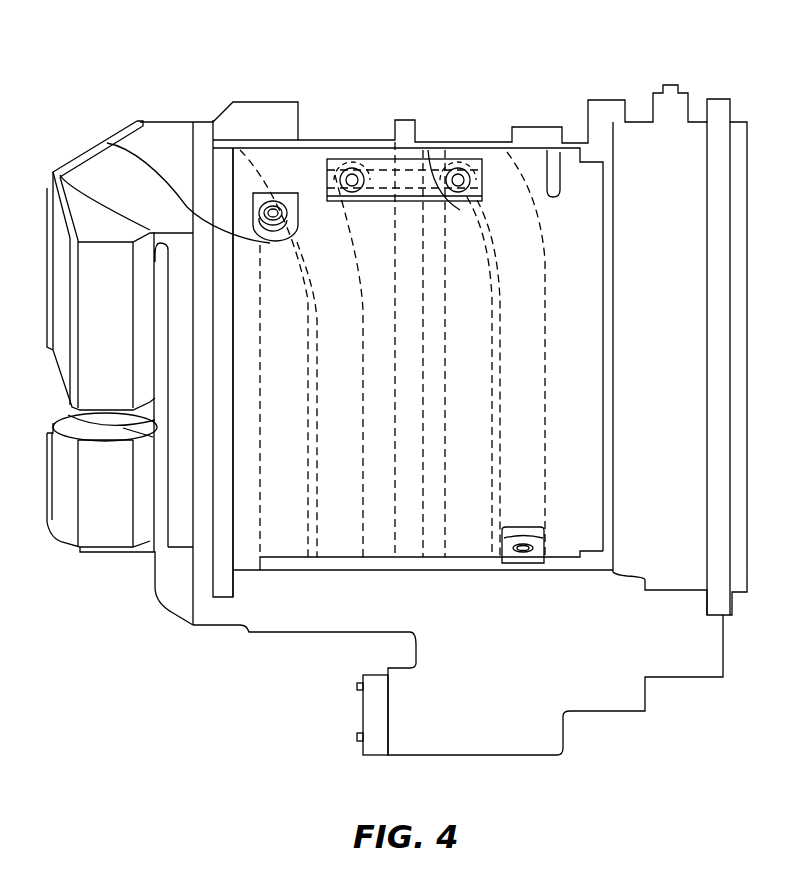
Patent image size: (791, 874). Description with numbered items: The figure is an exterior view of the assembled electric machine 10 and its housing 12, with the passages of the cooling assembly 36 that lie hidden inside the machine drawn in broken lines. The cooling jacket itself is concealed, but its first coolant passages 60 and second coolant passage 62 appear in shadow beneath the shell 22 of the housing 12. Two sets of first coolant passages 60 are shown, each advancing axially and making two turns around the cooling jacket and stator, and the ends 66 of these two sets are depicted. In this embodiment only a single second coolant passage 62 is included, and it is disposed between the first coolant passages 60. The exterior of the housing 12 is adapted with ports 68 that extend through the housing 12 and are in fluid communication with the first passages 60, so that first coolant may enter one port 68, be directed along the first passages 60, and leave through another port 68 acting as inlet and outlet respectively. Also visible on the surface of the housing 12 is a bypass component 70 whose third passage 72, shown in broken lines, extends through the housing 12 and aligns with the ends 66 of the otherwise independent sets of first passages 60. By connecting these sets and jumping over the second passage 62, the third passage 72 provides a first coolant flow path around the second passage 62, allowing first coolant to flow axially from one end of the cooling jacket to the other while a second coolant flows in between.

The electric machine 10 is at (386, 380).
The housing 12 is at (137, 575).
The shell 22 is at (487, 143).
The cooling assembly 36 is at (460, 141).
The first coolant passages 60 is at (283, 545).
The second coolant passage 62 is at (408, 545).
The ends 66 is at (107, 143).
The ports 68 is at (263, 193).
The bypass component 70 is at (382, 124).
The third passage 72 is at (383, 167).